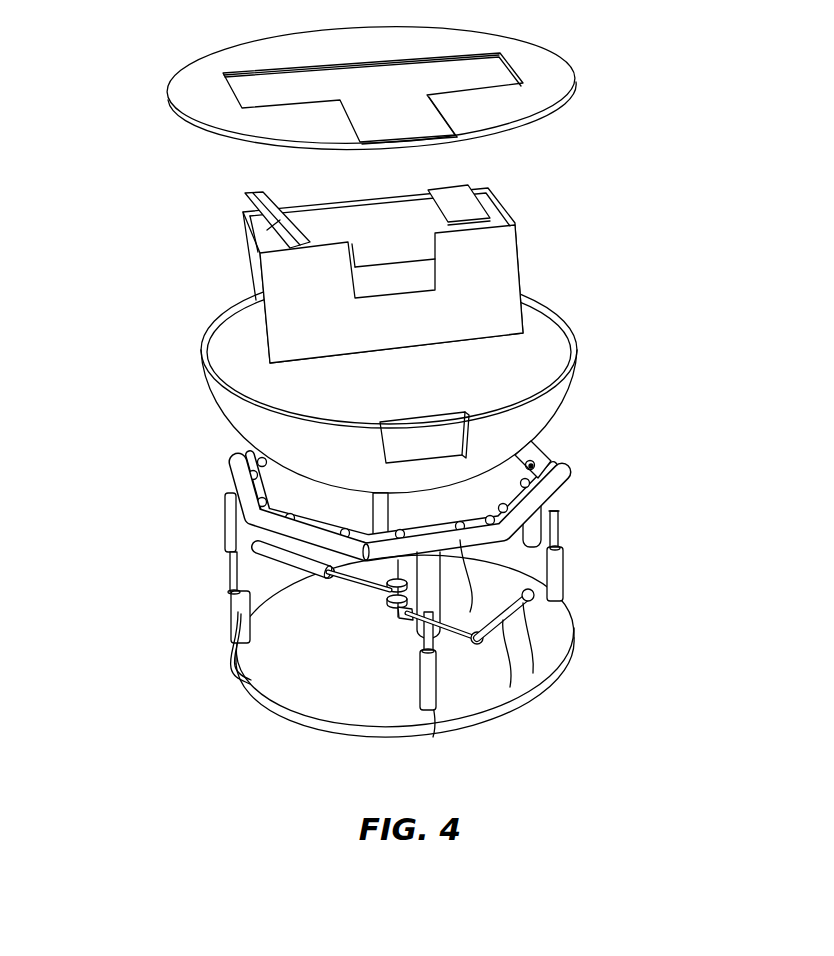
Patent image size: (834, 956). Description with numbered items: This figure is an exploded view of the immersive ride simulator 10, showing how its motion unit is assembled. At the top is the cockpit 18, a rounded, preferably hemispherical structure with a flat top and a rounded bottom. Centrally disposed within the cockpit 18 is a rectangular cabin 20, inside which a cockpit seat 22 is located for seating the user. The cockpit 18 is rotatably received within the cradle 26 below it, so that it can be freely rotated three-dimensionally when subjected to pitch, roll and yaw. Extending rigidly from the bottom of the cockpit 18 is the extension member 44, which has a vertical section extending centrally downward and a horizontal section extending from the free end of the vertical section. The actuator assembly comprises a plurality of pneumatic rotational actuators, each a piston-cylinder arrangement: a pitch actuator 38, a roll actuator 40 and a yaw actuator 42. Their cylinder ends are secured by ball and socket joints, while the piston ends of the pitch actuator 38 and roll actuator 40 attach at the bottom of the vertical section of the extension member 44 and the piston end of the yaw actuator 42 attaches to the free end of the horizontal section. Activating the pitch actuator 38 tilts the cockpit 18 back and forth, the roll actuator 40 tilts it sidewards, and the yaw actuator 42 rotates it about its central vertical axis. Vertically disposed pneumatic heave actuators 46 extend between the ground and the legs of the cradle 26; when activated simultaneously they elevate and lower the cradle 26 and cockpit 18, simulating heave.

The immersive ride simulator 10 is at (687, 150).
The cockpit 18 is at (196, 350).
The rectangular cabin 20 is at (282, 285).
The cockpit seat 22 is at (250, 203).
The cradle 26 is at (553, 465).
The pitch actuator 38 is at (543, 450).
The roll actuator 40 is at (237, 590).
The yaw actuator 42 is at (530, 597).
The extension member 44 is at (397, 617).
The heave actuator 46 is at (557, 560).